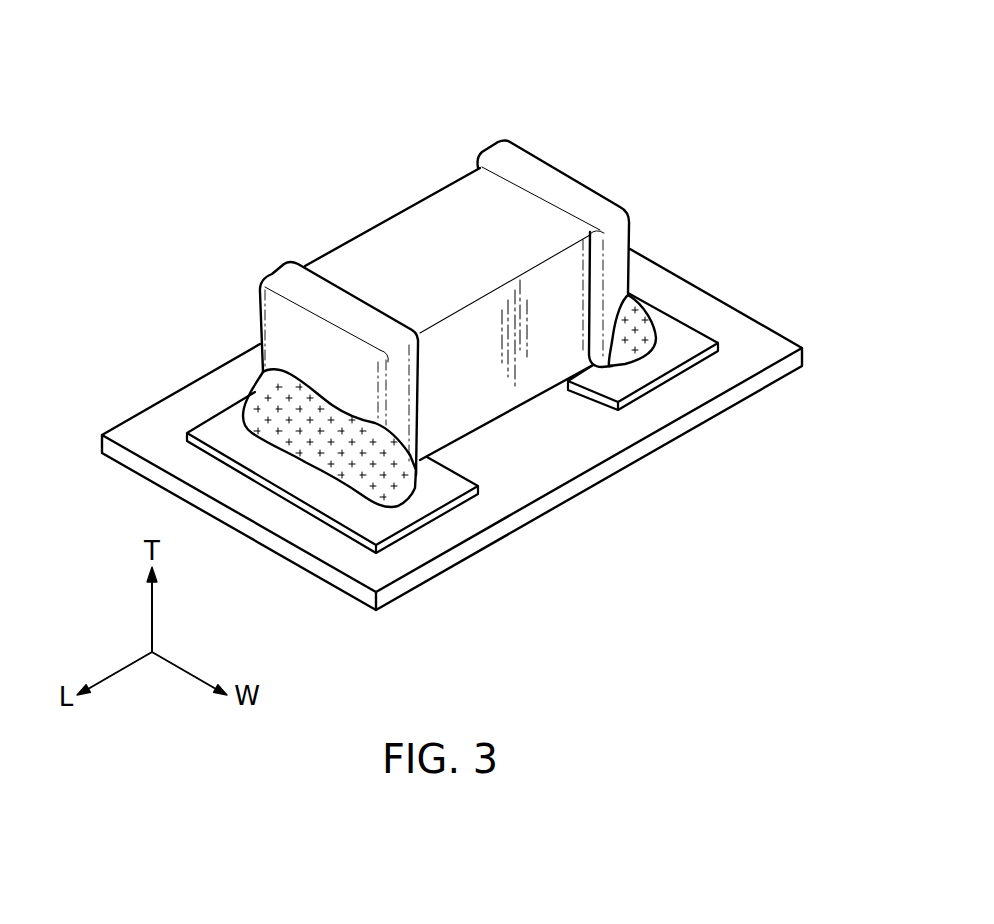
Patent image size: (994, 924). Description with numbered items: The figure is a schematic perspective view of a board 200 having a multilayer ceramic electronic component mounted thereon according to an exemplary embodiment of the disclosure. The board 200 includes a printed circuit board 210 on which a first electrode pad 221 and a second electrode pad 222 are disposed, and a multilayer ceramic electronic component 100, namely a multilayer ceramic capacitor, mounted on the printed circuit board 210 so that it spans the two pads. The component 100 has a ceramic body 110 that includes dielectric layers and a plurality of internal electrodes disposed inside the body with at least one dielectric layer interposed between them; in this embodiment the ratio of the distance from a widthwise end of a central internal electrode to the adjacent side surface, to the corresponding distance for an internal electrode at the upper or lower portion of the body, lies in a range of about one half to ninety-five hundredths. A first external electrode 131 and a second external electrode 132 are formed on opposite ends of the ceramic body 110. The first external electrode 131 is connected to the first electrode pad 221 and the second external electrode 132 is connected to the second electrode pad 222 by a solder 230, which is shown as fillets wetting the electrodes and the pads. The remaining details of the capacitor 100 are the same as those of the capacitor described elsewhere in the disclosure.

The multilayer ceramic electronic component 100 is at (353, 208).
The ceramic body 110 is at (440, 236).
The first external electrode 131 is at (297, 283).
The second external electrode 132 is at (497, 160).
The board having a multilayer ceramic electronic component mounted thereon 200 is at (425, 47).
The printed circuit board 210 is at (597, 477).
The first electrode pad 221 is at (402, 513).
The second electrode pad 222 is at (660, 363).
The solder 230 is at (633, 328).